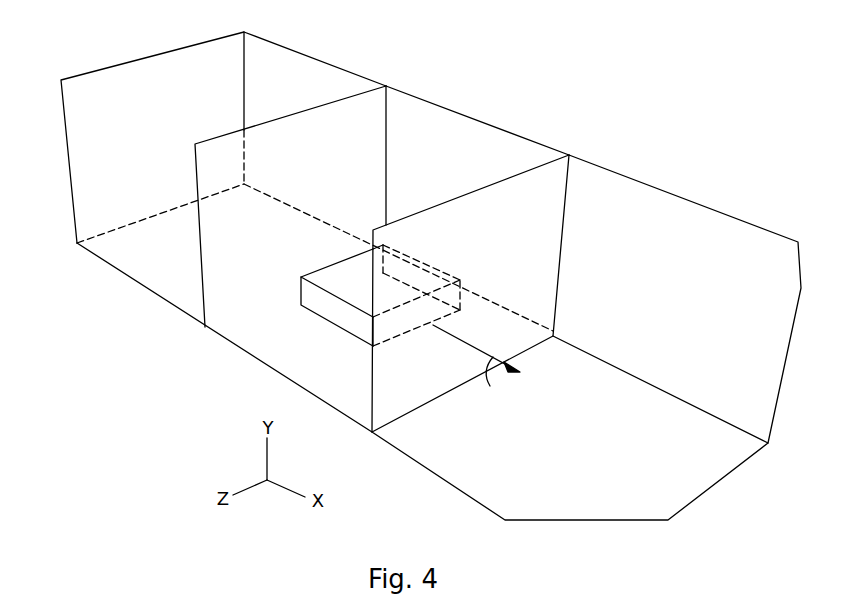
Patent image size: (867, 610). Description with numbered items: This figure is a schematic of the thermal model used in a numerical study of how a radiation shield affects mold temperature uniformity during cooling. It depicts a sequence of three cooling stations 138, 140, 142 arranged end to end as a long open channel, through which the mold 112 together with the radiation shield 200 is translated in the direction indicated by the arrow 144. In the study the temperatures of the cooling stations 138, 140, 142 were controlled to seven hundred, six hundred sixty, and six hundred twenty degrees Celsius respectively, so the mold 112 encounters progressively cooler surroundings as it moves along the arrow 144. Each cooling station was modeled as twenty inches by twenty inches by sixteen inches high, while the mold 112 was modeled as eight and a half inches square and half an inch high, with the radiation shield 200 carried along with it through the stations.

The cooling station 138 is at (305, 70).
The cooling station 140 is at (490, 138).
The cooling station 142 is at (643, 193).
The mold 112 is at (342, 285).
The radiation shield 200 is at (373, 296).
The arrow 144 is at (476, 365).